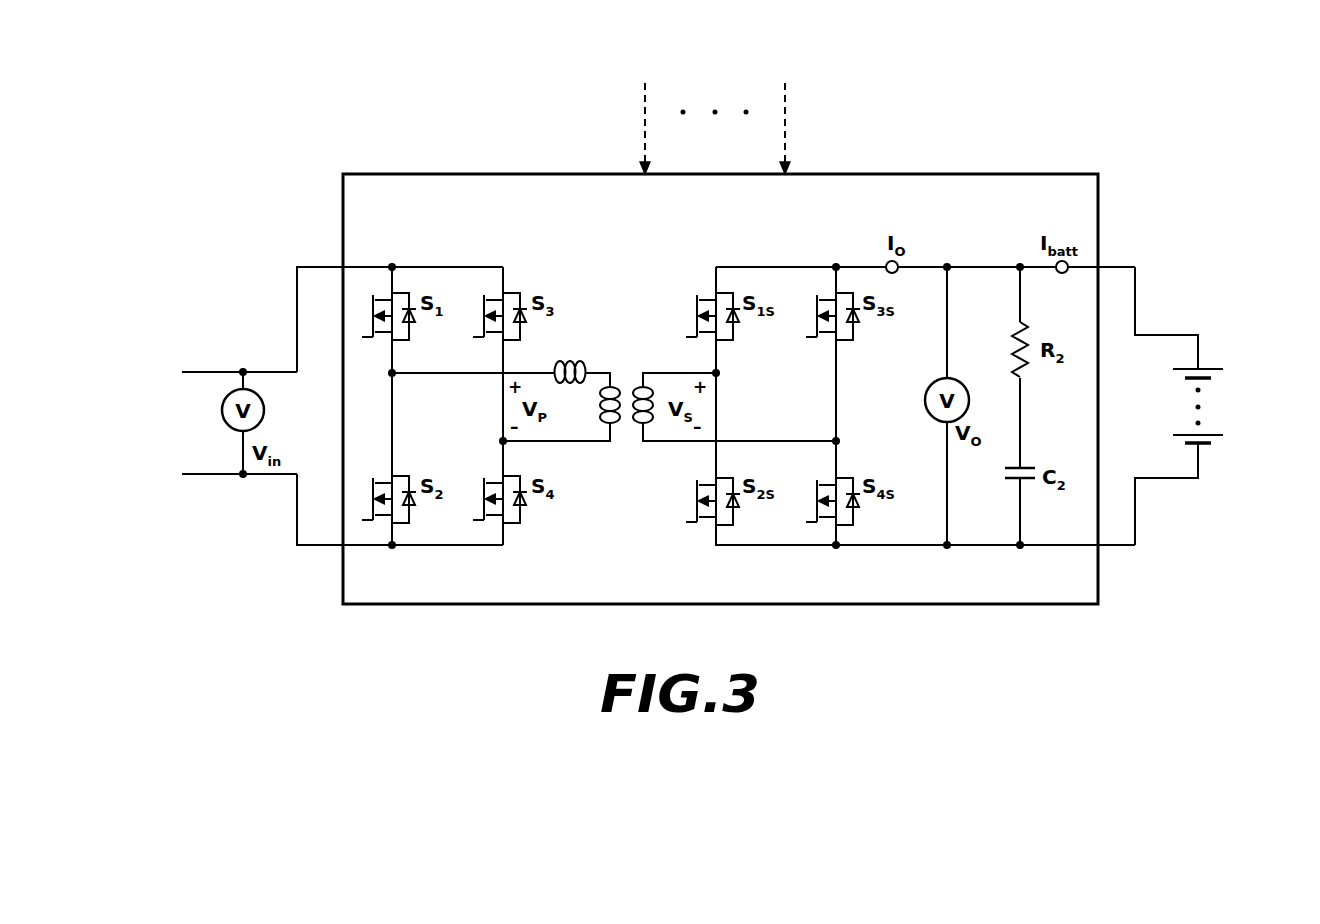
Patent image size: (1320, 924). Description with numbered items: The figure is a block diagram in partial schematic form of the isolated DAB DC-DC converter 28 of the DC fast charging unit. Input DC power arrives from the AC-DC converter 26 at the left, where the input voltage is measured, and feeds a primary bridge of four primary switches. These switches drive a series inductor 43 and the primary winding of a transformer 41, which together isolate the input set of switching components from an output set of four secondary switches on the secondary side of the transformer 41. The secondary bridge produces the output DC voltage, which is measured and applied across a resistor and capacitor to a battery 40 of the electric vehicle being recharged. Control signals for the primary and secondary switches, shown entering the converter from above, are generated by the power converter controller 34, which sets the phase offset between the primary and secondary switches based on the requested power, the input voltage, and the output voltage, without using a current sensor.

The AC-DC converter 26 is at (112, 372).
The DAB DC-DC converter 28 is at (392, 174).
The power converter controller (PCC) 34 is at (716, 98).
The battery 40 is at (1243, 378).
The transformer 41 is at (628, 443).
The inductor 43 is at (588, 362).